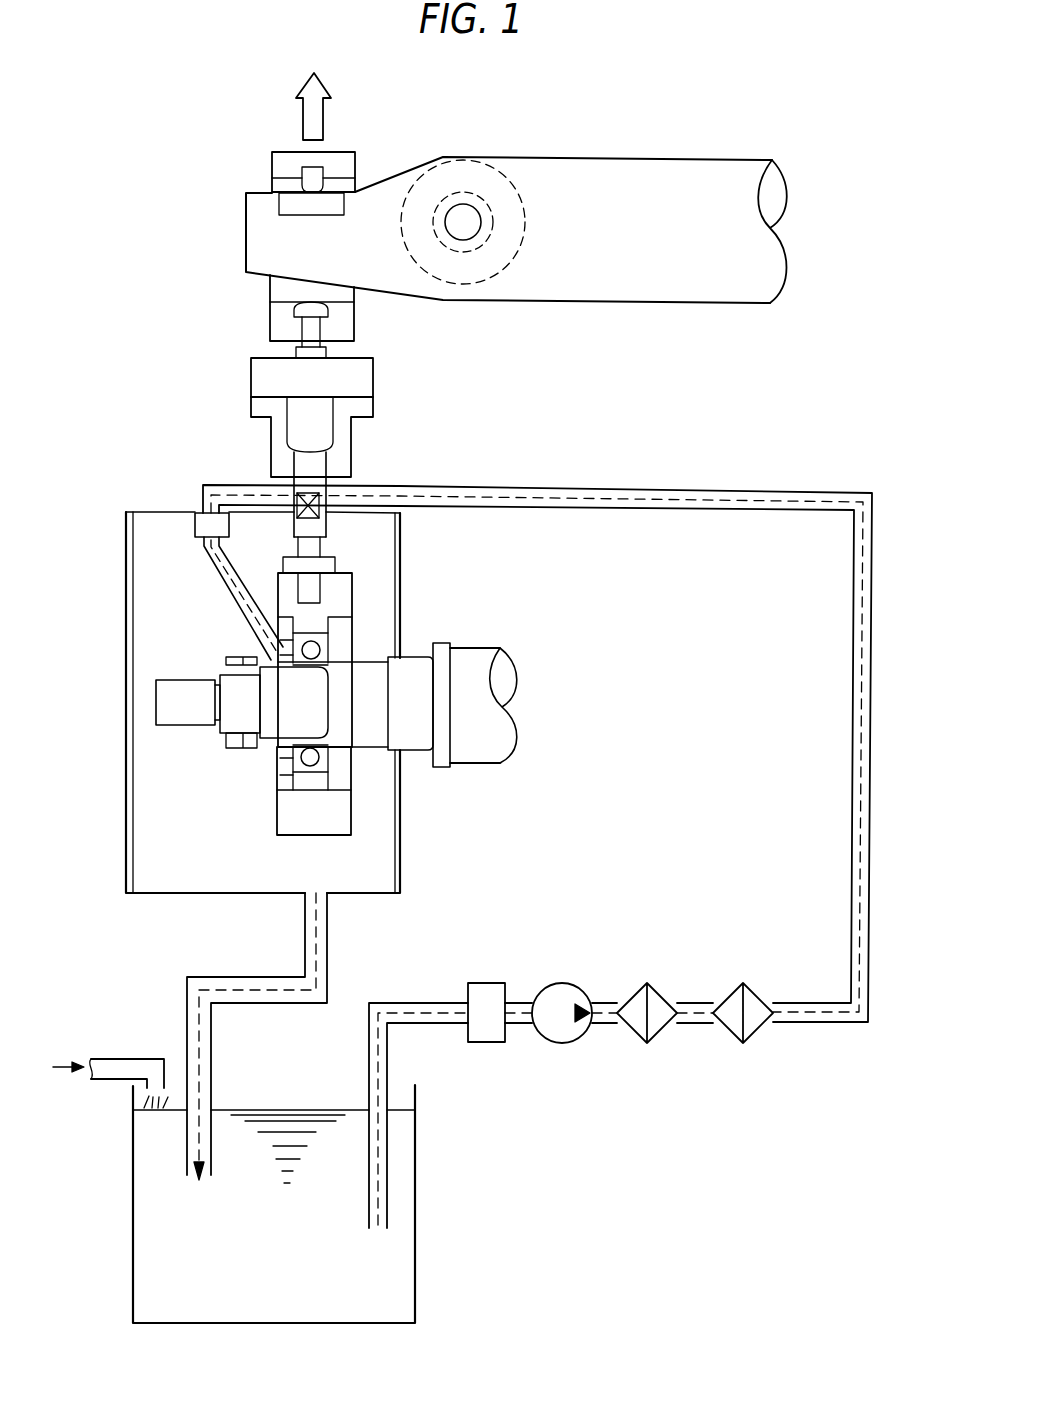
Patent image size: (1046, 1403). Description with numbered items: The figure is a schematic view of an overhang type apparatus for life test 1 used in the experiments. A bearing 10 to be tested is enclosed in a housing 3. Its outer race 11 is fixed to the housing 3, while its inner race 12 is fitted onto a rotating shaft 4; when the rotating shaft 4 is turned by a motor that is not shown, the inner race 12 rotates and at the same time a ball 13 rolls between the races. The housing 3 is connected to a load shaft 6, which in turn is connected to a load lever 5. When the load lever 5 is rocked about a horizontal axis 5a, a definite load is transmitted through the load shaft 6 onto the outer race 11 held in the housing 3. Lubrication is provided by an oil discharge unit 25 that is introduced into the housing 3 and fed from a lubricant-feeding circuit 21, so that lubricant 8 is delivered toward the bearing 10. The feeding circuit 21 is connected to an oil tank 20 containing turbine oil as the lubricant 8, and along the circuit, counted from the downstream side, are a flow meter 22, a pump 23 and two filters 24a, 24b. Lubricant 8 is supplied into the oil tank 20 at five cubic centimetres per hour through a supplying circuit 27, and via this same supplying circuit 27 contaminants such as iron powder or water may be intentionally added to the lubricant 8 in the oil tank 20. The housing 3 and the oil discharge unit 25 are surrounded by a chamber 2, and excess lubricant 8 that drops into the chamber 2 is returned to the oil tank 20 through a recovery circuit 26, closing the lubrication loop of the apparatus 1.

The overhang type apparatus for life test 1 is at (178, 152).
The chamber 2 is at (126, 840).
The housing 3 is at (282, 820).
The rotating shaft 4 is at (480, 658).
The load lever 5 is at (640, 160).
The horizontal axis 5a is at (464, 220).
The load shaft 6 is at (268, 324).
The lubricant 8 is at (134, 1255).
The bearing 10 is at (306, 645).
The outer race 11 is at (325, 766).
The inner race 12 is at (296, 752).
The rolling element (ball) 13 is at (298, 653).
The oil tank 20 is at (416, 1255).
The lubricant-feeding circuit 21 is at (705, 486).
The flow meter 22 is at (486, 982).
The pump 23 is at (563, 982).
The filter 24a is at (652, 982).
The filter 24b is at (748, 982).
The oil discharge unit 25 is at (268, 590).
The recovery circuit 26 is at (332, 948).
The supplying circuit 27 is at (124, 1058).